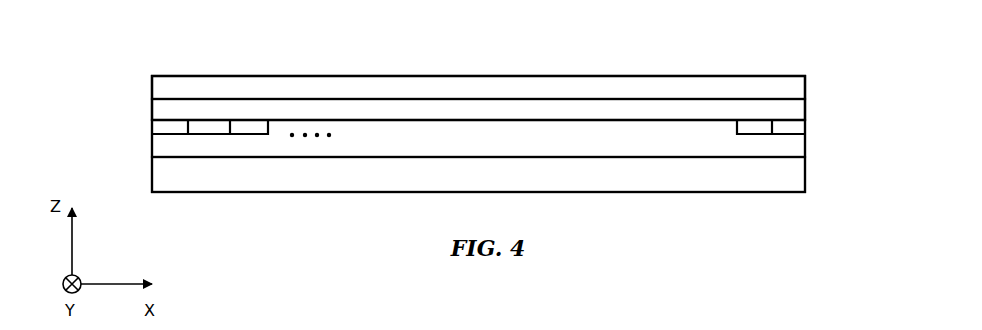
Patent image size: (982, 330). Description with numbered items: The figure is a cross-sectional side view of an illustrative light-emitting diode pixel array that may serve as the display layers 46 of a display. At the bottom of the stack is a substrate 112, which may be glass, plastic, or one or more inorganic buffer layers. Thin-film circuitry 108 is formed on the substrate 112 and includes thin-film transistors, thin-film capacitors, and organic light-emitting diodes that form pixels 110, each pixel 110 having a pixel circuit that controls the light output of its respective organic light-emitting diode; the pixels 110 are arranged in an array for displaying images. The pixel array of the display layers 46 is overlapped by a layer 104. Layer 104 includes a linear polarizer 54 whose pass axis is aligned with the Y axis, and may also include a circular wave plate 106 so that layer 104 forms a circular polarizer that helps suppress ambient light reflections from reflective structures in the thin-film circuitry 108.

The display layers 46 is at (104, 64).
The linear polarizer 54 is at (800, 83).
The layer 104 is at (146, 76).
The circular wave plate 106 is at (800, 108).
The thin-film circuitry 108 is at (812, 121).
The pixels 110 is at (210, 128).
The substrate 112 is at (800, 174).